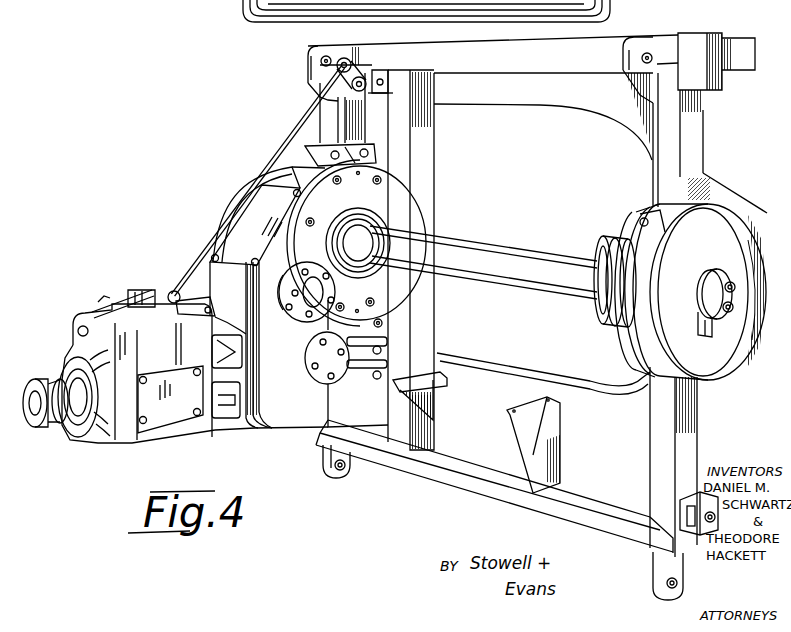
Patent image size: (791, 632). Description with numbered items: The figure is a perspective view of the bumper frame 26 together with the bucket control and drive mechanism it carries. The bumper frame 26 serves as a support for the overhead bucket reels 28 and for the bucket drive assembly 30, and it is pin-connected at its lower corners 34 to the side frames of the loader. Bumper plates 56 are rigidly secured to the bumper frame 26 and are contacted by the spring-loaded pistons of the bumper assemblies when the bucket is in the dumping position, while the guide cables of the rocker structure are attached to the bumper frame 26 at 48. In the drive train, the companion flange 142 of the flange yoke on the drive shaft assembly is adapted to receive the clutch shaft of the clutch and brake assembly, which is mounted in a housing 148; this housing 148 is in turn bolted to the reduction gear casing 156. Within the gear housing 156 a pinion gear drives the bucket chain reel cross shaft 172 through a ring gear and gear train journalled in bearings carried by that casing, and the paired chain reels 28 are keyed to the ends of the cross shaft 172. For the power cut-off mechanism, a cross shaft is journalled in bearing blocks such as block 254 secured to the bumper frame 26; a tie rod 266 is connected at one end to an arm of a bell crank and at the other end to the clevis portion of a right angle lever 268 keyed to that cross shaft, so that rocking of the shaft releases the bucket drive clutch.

The bumper frame 26 is at (502, 105).
The bucket reels 28 is at (230, 212).
The bucket drive assembly 30 is at (155, 272).
The lower corners 34 is at (347, 474).
The cable attachment point 48 is at (690, 513).
The bumper plates 56 is at (712, 32).
The companion flange 142 is at (37, 427).
The housing 148 is at (75, 350).
The reduction gear casing 156 is at (277, 428).
The bucket chain reel cross shaft 172 is at (484, 246).
The bearing block 254 is at (391, 81).
The tie rod 266 is at (294, 131).
The right angle lever 268 is at (366, 73).